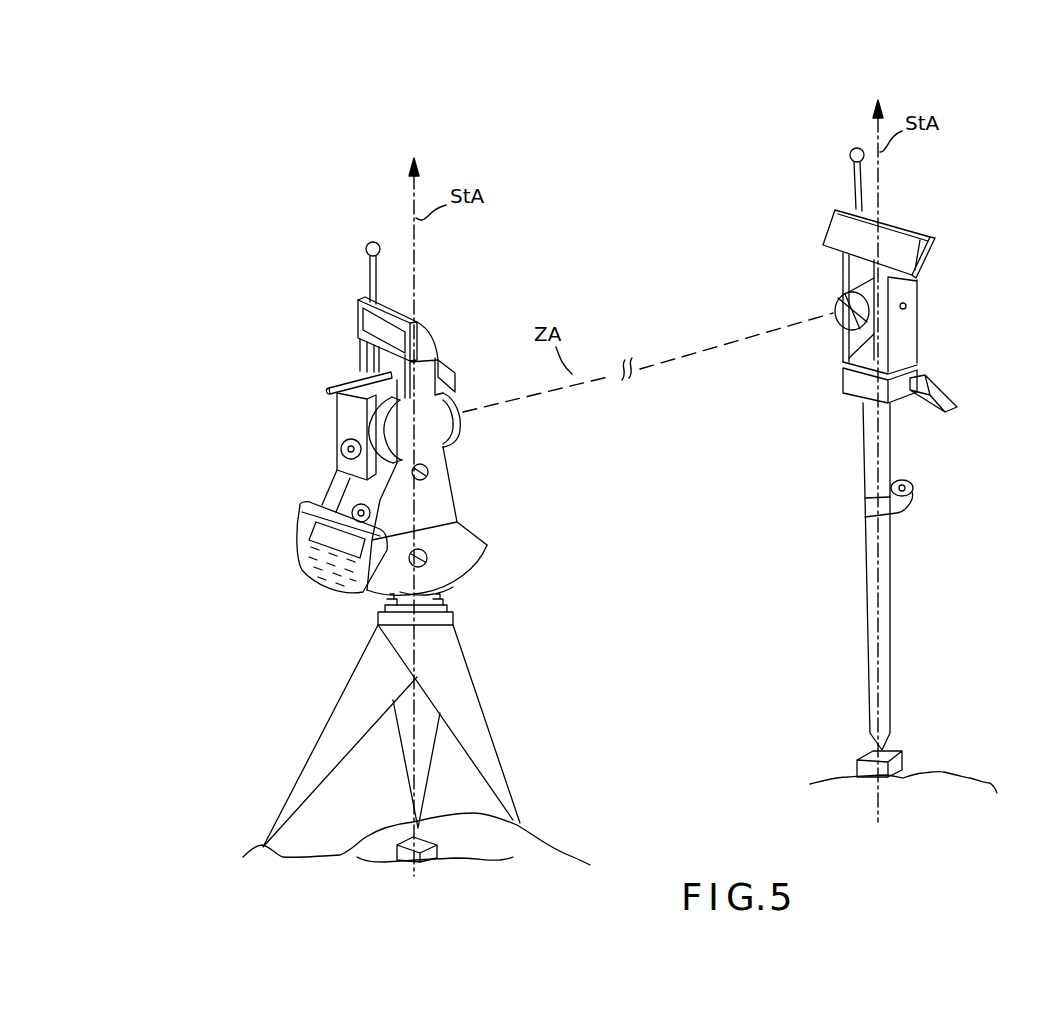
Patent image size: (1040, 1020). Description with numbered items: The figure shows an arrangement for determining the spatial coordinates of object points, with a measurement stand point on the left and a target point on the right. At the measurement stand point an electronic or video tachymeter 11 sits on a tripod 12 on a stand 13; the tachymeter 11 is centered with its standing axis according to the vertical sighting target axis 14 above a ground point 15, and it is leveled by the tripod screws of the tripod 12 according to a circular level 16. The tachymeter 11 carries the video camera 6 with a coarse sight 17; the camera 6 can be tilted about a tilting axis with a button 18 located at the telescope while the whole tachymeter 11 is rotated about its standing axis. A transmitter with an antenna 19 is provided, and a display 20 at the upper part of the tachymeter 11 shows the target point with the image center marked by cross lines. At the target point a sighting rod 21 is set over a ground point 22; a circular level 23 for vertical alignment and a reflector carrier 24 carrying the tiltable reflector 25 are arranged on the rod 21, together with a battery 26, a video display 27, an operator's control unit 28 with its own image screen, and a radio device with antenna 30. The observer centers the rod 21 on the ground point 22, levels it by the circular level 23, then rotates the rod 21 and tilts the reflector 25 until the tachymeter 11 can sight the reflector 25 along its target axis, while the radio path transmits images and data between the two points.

The video camera 6 is at (340, 414).
The video tachymeter 11 is at (330, 496).
The tripod 12 is at (385, 604).
The stand 13 is at (323, 742).
The vertical sighting target axis 14 is at (418, 652).
The ground point 15 is at (420, 844).
The circular level 16 is at (300, 520).
The coarse sight 17 is at (334, 383).
The button 18 is at (342, 451).
The antenna 19 is at (374, 244).
The display 20 is at (362, 312).
The sighting rod 21 is at (866, 546).
The ground point 22 is at (895, 742).
The circular level 23 is at (905, 480).
The reflector carrier 24 is at (917, 337).
The reflector 25 is at (840, 300).
The battery 26 is at (843, 386).
The video display 27 is at (940, 242).
The operator's control unit 28 is at (947, 392).
The antenna 30 is at (852, 176).